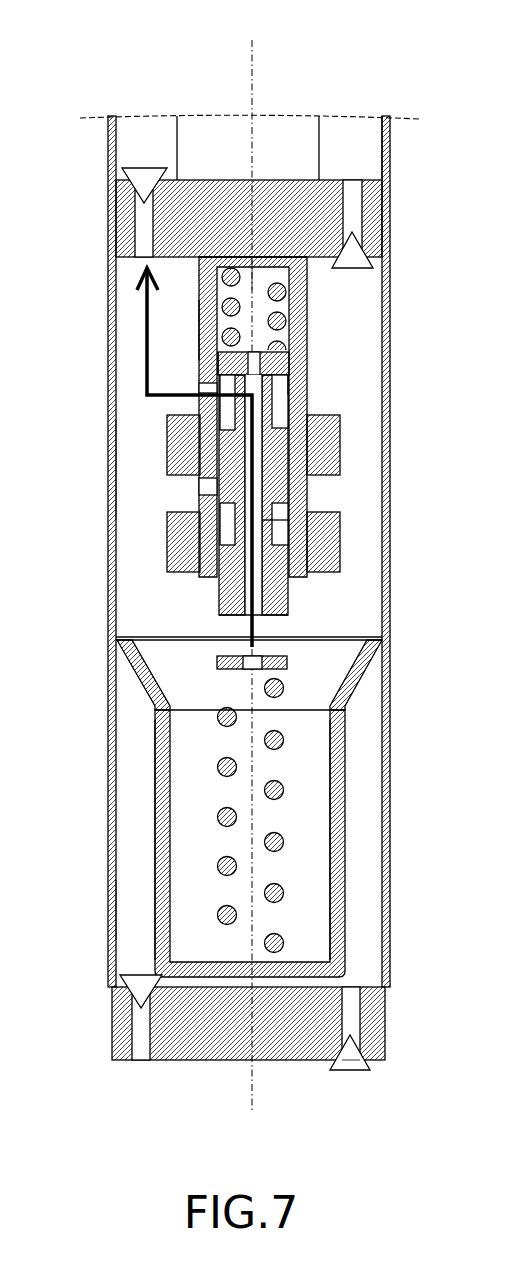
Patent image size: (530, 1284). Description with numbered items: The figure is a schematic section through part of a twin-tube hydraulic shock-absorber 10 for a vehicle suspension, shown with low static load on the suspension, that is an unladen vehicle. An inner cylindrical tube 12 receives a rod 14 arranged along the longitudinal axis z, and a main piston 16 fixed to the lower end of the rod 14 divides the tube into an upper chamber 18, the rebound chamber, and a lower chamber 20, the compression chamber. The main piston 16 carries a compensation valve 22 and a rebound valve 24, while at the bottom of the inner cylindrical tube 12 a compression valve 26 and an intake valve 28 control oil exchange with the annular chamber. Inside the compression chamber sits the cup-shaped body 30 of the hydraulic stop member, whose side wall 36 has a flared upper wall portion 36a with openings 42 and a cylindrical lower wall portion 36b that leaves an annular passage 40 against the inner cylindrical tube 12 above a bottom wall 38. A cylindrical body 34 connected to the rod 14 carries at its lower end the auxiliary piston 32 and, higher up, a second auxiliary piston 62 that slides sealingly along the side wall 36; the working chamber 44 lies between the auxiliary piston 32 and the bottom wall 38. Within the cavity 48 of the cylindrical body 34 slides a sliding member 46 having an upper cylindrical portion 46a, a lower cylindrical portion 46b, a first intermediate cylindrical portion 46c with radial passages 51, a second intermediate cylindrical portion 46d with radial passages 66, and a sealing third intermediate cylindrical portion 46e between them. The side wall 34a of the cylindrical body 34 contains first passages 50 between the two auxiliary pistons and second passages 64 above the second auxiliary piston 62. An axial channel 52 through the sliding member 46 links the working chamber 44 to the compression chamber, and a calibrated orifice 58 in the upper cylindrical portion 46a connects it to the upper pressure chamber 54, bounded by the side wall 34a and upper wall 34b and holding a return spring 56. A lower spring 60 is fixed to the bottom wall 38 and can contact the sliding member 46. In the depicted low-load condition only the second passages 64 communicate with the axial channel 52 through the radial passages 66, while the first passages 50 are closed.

The twin-tube hydraulic shock-absorber 10 is at (73, 104).
The inner cylindrical tube 12 is at (388, 352).
The rod 14 is at (322, 140).
The main piston 16 is at (108, 198).
The upper chamber 18 is at (360, 140).
The lower chamber 20 is at (110, 478).
The compensation valve 22 is at (135, 168).
The rebound valve 24 is at (355, 272).
The compression valve 26 is at (347, 1070).
The intake valve 28 is at (140, 975).
The cup-shaped body 30 is at (346, 831).
The auxiliary piston 32 is at (340, 536).
The cylindrical body 34 is at (308, 328).
The side wall 34a is at (200, 325).
The upper wall 34b is at (212, 262).
The side wall 36 is at (343, 907).
The upper wall portion 36a is at (118, 643).
The lower wall portion 36b is at (157, 858).
The bottom wall 38 is at (183, 978).
The annular passage 40 is at (120, 910).
The openings 42 is at (152, 688).
The working chamber 44 is at (305, 942).
The sliding member 46 is at (282, 621).
The upper cylindrical portion 46a is at (220, 360).
The lower cylindrical portion 46b is at (220, 608).
The first intermediate cylindrical portion 46c is at (200, 533).
The second intermediate cylindrical portion 46d is at (288, 385).
The third intermediate cylindrical portion 46e is at (295, 492).
The cavity 48 is at (295, 456).
The first passages 50 is at (213, 492).
The radial passages 51 is at (283, 530).
The axial channel 52 is at (263, 607).
The upper pressure chamber 54 is at (262, 272).
The return spring 56 is at (308, 284).
The calibrated orifice 58 is at (292, 372).
The lower spring 60 is at (276, 955).
The second auxiliary piston 62 is at (183, 448).
The second passages 64 is at (215, 402).
The radial passages 66 is at (308, 408).
The longitudinal axis z is at (250, 1097).